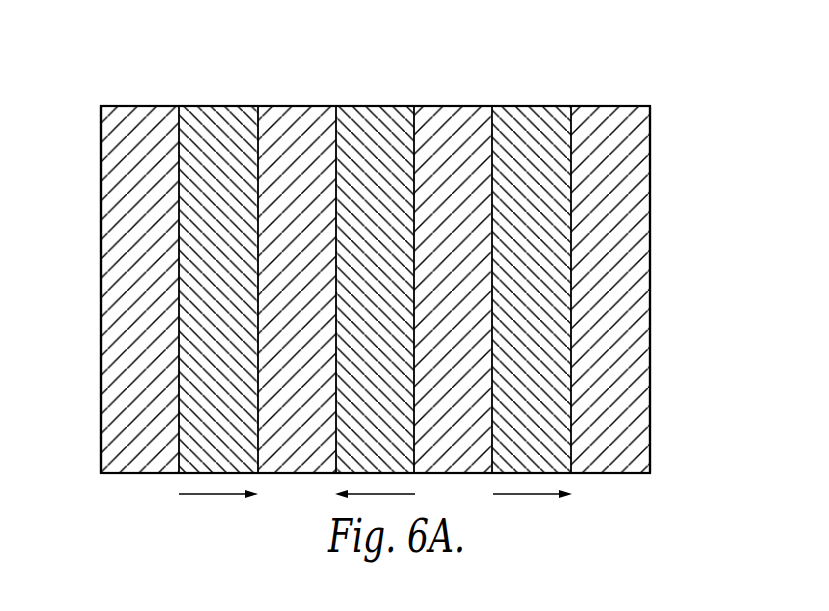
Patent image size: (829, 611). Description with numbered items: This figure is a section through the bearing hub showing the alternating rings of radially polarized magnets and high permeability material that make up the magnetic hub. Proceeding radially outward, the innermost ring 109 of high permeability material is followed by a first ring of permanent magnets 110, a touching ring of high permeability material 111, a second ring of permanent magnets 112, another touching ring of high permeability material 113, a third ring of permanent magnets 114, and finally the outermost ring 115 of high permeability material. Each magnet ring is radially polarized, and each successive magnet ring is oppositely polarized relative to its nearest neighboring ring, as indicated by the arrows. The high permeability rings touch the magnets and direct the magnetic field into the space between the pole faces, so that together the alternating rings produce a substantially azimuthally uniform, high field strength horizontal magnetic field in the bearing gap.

The innermost ring 109 is at (131, 123).
The ring of permanent magnets 110 is at (229, 120).
The ring of high permeability material 111 is at (302, 118).
The ring of permanent magnets 112 is at (372, 118).
The ring of high permeability material 113 is at (452, 118).
The ring of permanent magnets 114 is at (543, 127).
The outermost ring 115 is at (625, 137).